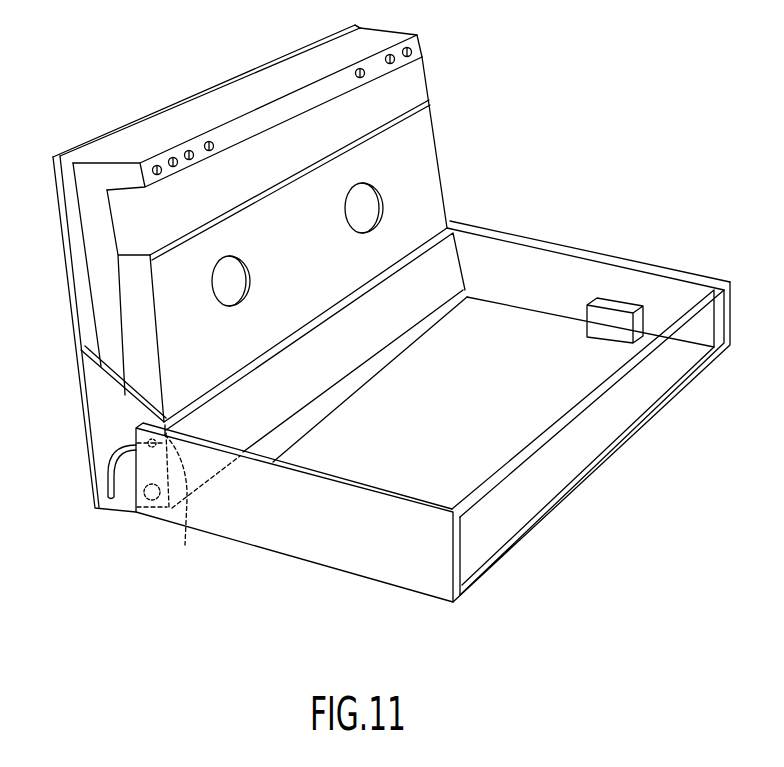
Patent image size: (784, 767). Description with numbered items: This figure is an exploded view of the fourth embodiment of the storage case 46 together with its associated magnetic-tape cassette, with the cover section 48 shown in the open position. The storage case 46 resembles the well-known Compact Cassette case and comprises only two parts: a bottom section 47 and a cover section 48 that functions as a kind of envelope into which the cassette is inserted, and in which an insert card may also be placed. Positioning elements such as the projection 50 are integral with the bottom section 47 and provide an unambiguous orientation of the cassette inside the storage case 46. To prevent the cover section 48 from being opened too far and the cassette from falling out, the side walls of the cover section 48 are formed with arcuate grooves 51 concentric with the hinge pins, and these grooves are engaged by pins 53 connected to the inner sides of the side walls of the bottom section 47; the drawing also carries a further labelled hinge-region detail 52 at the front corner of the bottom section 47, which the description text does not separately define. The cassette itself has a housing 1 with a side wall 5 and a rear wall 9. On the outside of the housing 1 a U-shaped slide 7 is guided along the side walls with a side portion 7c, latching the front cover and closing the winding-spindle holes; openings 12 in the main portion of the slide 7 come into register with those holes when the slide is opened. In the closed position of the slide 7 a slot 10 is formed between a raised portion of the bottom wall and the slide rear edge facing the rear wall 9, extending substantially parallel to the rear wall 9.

The housing 1 is at (440, 134).
The side wall 5 is at (95, 237).
The U-shaped slide 7 is at (282, 213).
The side portion 7c is at (138, 305).
The rear wall 9 is at (246, 97).
The slot 10 is at (400, 92).
The openings 12 is at (355, 221).
The storage case 46 is at (618, 460).
The bottom section 47 is at (307, 567).
The cover section 48 is at (73, 405).
The positioning element 50 is at (607, 322).
The arcuate grooves 51 is at (110, 483).
The hinge plate 52 is at (148, 510).
The pins 53 is at (181, 505).